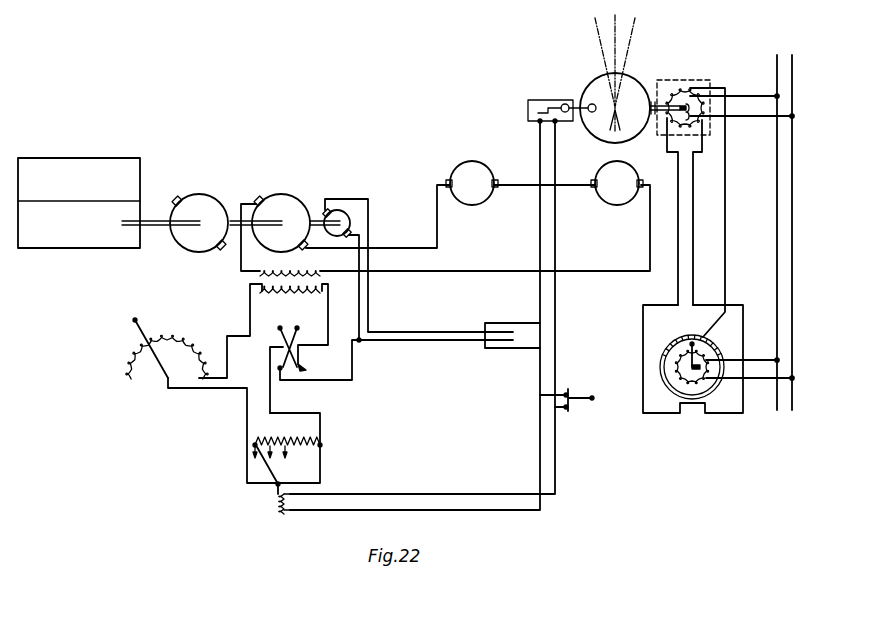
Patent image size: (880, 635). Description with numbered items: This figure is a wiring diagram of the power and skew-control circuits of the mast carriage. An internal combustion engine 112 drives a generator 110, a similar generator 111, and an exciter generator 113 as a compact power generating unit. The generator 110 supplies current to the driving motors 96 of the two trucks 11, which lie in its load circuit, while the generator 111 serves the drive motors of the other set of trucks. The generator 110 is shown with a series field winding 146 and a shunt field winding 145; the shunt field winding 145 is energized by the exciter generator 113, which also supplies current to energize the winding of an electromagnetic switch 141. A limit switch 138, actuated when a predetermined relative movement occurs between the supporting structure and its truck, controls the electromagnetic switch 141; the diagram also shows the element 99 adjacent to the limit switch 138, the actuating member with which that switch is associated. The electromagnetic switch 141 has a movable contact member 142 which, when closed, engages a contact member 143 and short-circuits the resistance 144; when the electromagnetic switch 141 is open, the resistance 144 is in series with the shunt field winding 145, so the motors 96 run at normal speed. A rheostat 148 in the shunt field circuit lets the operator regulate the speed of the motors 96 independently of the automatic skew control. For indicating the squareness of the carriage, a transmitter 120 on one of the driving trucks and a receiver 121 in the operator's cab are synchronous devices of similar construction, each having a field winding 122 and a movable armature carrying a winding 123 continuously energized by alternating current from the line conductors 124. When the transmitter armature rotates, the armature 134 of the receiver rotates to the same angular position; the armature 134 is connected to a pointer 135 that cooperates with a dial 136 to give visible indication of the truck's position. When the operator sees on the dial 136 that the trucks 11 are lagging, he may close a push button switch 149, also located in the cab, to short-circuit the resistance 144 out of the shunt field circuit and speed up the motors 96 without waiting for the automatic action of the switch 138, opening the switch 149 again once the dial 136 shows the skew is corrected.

The trucks 11 is at (664, 30).
The driving motors 96 is at (472, 202).
The disc with indicator 99 is at (595, 86).
The generator 110 is at (308, 180).
The generator 111 is at (195, 203).
The internal combustion engine 112 is at (44, 243).
The exciter generator 113 is at (340, 220).
The transmitter 120 is at (665, 80).
The receiver 121 is at (663, 343).
The field winding 122 is at (690, 88).
The armature winding 123 is at (703, 143).
The line conductors 124 is at (792, 196).
The receiver armature 134 is at (693, 387).
The pointer 135 is at (680, 361).
The dial 136 is at (713, 340).
The limit switch 138 is at (540, 102).
The electromagnetic switch 141 is at (270, 506).
The movable contact member 142 is at (277, 483).
The contact member 143 is at (288, 487).
The resistance 144 is at (298, 437).
The shunt field winding 145 is at (273, 297).
The series field winding 146 is at (302, 270).
The rheostat 148 is at (162, 332).
The push button switch 149 is at (578, 403).